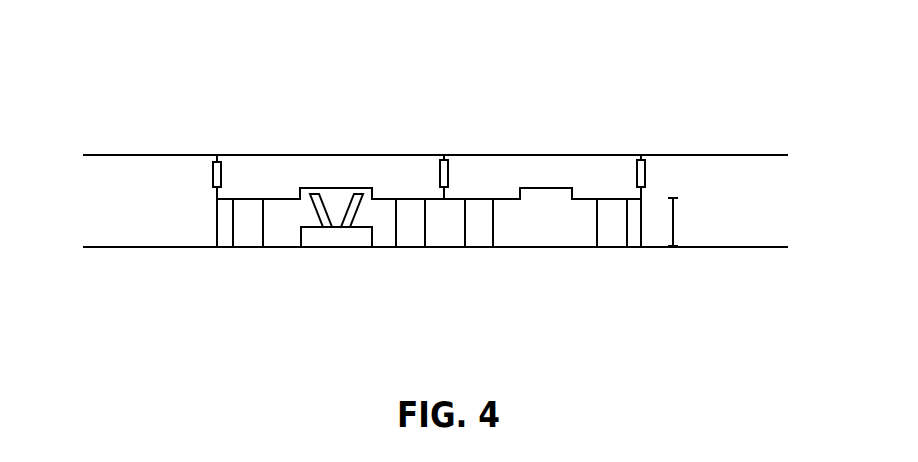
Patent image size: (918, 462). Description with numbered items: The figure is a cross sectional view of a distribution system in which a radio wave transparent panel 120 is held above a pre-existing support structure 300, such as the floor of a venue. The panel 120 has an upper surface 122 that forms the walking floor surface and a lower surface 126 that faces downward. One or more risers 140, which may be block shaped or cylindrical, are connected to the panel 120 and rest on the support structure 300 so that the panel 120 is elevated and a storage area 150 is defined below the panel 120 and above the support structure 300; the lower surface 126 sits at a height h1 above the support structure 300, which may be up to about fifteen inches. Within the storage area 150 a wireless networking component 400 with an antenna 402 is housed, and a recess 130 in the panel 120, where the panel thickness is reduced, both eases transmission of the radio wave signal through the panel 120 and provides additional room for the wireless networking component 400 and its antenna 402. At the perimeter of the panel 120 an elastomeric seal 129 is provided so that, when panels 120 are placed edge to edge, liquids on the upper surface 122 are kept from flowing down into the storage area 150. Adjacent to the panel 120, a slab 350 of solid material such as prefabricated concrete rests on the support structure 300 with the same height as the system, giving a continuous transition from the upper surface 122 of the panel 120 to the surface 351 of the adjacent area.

The support structure 300 is at (467, 358).
The slab 350 is at (128, 180).
The surface of an adjacent area 351 is at (185, 155).
The panel 120 is at (268, 168).
The upper surface 122 is at (320, 155).
The lower surface 126 is at (507, 200).
The seal 129 is at (448, 170).
The recess 130 is at (538, 190).
The riser 140 is at (255, 235).
The storage area 150 is at (559, 200).
The wireless networking component 400 is at (340, 240).
The antenna 402 is at (348, 198).
The height h1 is at (687, 222).